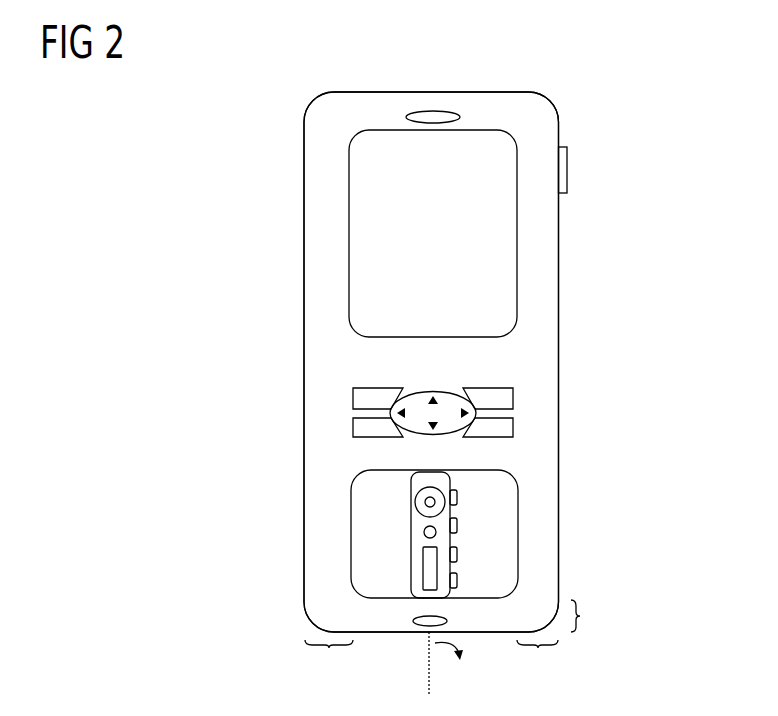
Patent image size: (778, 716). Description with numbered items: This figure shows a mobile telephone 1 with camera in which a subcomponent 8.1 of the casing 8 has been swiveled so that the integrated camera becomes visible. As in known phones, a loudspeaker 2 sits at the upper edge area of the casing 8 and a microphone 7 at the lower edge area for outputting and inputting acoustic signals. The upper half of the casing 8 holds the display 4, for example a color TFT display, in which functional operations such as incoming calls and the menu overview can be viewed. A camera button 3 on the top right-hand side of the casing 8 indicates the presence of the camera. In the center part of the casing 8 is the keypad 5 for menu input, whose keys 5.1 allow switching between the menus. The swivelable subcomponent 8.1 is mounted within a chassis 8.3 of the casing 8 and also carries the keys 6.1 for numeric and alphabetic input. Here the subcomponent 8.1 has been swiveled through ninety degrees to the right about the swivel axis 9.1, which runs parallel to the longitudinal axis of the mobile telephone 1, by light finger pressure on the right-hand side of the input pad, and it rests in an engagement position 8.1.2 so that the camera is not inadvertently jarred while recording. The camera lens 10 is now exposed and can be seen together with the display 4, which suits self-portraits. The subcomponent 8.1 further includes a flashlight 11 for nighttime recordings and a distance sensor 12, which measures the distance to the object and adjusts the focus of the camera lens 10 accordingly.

The mobile telephone 1 is at (572, 65).
The loudspeaker 2 is at (433, 116).
The camera button 3 is at (567, 171).
The display of the mobile telephone 4 is at (443, 246).
The keypad for menu input 5 is at (526, 387).
The key of the menu input keypad 5.1 is at (513, 420).
The key of the numeric/alphabetic input pad 6.1 is at (457, 521).
The microphone 7 is at (425, 626).
The casing of the mobile telephone 8 is at (549, 227).
The swivelable subcomponent of the casing 8.1 is at (397, 487).
The engagement position "two" of the subcomponent 8.1.2 is at (420, 464).
The chassis of the casing 8.3 is at (460, 644).
The swivel axis running parallel to the longitudinal axis of the mobile telephone 9.1 is at (430, 688).
The camera lens 10 is at (415, 502).
The flashlight 11 is at (423, 578).
The distance sensor 12 is at (424, 532).